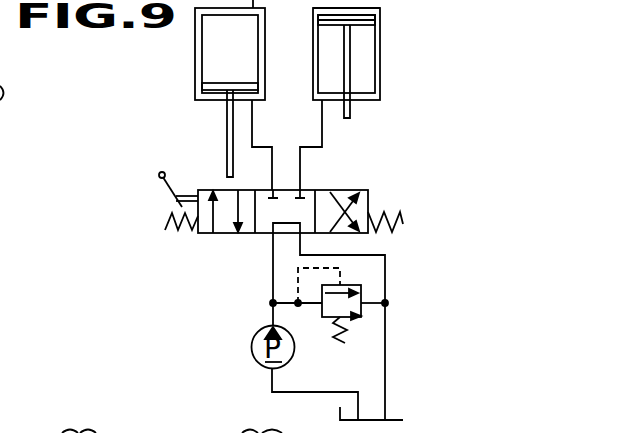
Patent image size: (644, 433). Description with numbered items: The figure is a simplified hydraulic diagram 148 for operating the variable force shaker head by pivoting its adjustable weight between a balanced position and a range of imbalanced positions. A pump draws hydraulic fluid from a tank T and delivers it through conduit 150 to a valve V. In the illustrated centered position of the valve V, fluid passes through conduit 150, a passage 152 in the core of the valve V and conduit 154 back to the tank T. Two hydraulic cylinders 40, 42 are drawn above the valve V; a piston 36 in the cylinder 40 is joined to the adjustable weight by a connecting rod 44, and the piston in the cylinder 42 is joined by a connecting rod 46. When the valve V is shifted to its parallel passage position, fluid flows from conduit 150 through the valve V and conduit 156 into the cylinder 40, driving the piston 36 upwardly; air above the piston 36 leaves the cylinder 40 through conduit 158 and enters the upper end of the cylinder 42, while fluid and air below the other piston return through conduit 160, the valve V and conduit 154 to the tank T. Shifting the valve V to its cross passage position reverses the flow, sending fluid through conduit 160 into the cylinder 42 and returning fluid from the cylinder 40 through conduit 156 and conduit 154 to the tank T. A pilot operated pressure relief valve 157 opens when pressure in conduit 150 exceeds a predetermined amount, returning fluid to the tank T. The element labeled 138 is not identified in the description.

The piston 36 is at (207, 85).
The hydraulic cylinder 40 is at (205, 28).
The hydraulic cylinder 42 is at (370, 59).
The connecting rod 44 is at (227, 116).
The connecting rod 46 is at (350, 112).
The piston 138 is at (372, 23).
The hydraulic diagram 148 is at (136, 198).
The conduit 150 is at (273, 283).
The passage 152 is at (270, 227).
The conduit 154 is at (385, 279).
The conduit 156 is at (252, 137).
The pilot operated pressure relief valve 157 is at (357, 316).
The conduit 158 is at (326, 3).
The conduit 160 is at (322, 138).
The valve V is at (353, 192).
The tank T is at (403, 419).